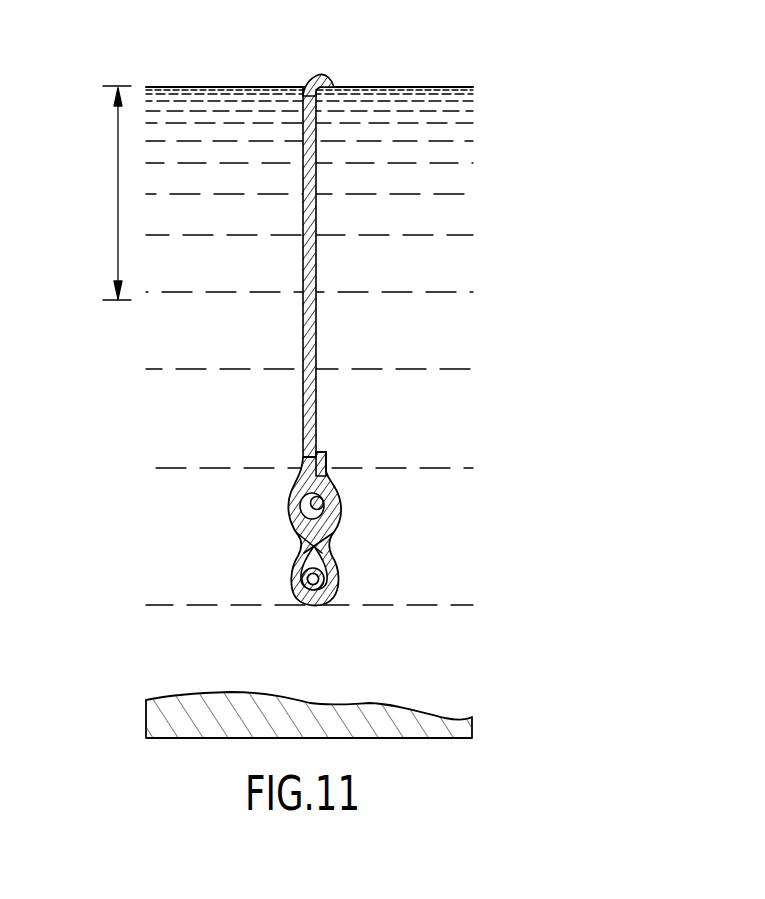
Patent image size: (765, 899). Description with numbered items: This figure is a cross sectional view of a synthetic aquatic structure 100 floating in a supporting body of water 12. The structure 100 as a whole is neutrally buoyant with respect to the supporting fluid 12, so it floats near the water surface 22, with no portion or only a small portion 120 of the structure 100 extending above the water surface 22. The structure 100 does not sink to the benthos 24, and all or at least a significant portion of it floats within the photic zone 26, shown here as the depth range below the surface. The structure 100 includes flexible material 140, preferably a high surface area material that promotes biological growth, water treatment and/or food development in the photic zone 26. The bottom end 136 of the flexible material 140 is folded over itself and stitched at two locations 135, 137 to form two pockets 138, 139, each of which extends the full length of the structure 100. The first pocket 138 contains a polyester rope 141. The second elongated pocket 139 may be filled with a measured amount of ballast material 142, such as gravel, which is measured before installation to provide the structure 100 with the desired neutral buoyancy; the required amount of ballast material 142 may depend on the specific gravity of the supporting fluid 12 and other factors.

The supporting body of water 12 is at (462, 343).
The water surface 22 is at (453, 86).
The benthos 24 is at (387, 704).
The photic zone 26 is at (118, 193).
The synthetic aquatic structure 100 is at (388, 206).
The small portion of the structure 120 is at (330, 80).
The stitching location 135 is at (333, 545).
The bottom end of the flexible material 136 is at (323, 452).
The stitching location 137 is at (326, 462).
The first pocket 138 is at (300, 578).
The second elongated pocket 139 is at (307, 486).
The flexible material 140 is at (316, 338).
The polyester rope 141 is at (323, 602).
The ballast material 142 is at (330, 529).